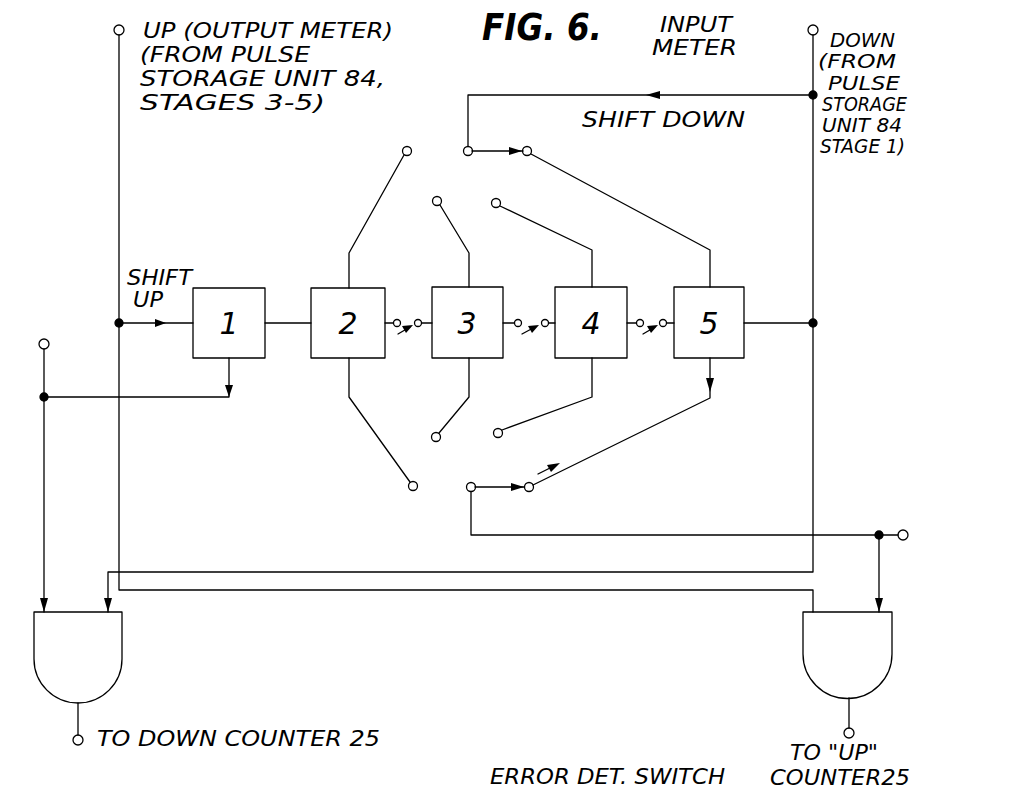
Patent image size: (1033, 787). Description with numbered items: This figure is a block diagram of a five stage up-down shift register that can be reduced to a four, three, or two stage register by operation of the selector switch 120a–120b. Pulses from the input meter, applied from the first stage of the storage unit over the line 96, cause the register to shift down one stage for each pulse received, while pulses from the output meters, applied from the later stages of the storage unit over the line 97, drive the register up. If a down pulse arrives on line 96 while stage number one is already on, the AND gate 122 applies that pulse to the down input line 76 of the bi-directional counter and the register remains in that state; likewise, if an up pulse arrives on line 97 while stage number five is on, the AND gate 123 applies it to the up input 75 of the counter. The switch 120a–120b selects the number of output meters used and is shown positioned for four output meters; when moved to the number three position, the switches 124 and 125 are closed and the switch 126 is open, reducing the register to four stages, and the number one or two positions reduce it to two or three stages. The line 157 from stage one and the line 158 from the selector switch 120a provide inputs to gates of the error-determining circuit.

The line 97 is at (119, 197).
The line 96 is at (812, 63).
The line 157 is at (44, 364).
The line 158 is at (882, 533).
The selector switch 120a is at (529, 433).
The selector switch 120b is at (529, 204).
The switch 124 is at (408, 333).
The switch 125 is at (538, 333).
The switch 126 is at (656, 333).
The AND gate 122 is at (122, 642).
The AND gate 123 is at (803, 642).
The down input line 76 is at (82, 719).
The up input 75 is at (848, 713).